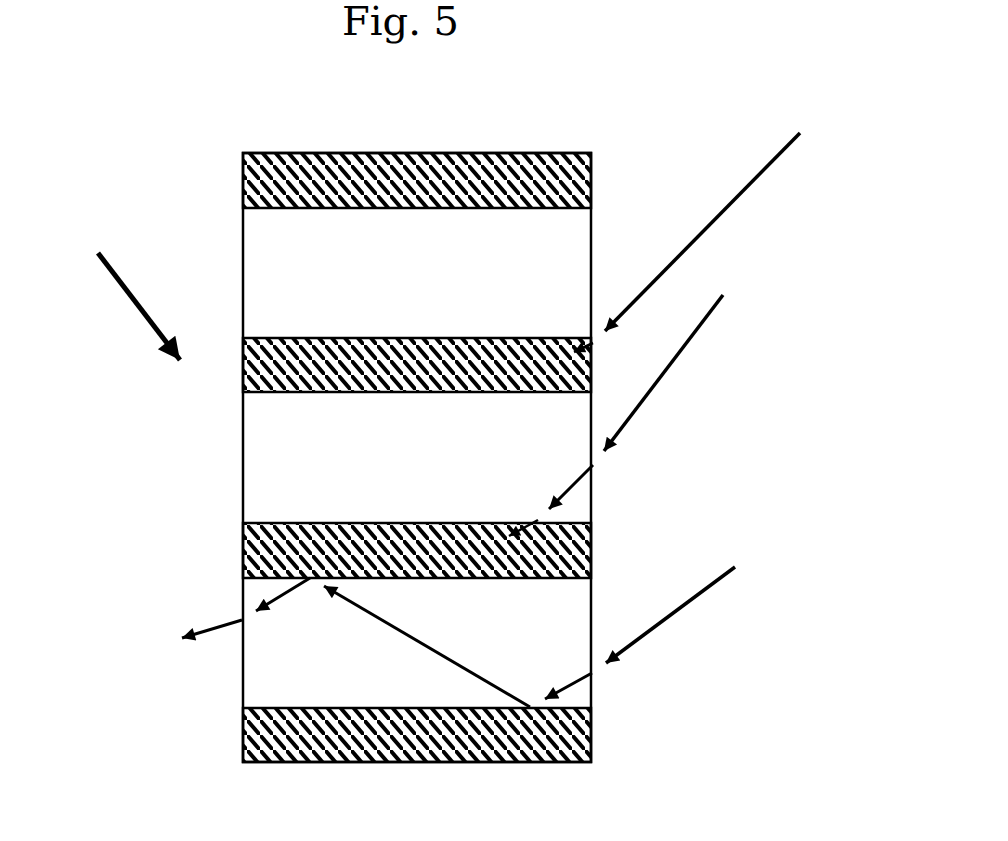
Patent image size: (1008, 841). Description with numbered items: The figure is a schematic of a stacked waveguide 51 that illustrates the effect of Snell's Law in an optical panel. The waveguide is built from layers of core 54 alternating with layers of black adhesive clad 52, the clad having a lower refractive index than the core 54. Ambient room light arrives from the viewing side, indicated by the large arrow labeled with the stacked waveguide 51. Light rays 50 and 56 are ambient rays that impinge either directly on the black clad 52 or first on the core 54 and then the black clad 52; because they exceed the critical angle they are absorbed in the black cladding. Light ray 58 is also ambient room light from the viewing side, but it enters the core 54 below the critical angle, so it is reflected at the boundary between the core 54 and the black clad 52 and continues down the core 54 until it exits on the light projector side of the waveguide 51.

The light ray 50 is at (687, 201).
The stacked waveguide 51 is at (115, 285).
The black clad 52 is at (501, 457).
The core 54 is at (457, 457).
The light ray 56 is at (684, 408).
The light ray 58 is at (505, 625).